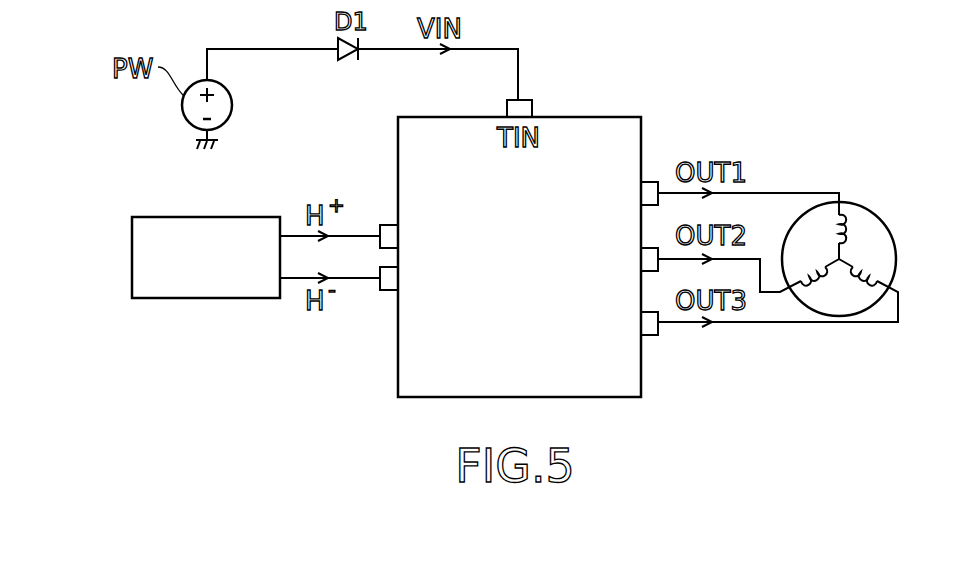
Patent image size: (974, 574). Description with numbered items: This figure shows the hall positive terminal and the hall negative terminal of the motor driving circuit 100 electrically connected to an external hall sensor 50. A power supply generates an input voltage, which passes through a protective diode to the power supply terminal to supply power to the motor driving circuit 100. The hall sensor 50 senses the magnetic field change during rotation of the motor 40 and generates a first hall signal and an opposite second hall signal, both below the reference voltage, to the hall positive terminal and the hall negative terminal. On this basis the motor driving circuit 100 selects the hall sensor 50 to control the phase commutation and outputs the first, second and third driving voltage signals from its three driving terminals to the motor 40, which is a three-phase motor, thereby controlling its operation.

The motor driving circuit 100 is at (597, 117).
The hall sensor 50 is at (171, 217).
The motor 40 is at (867, 208).